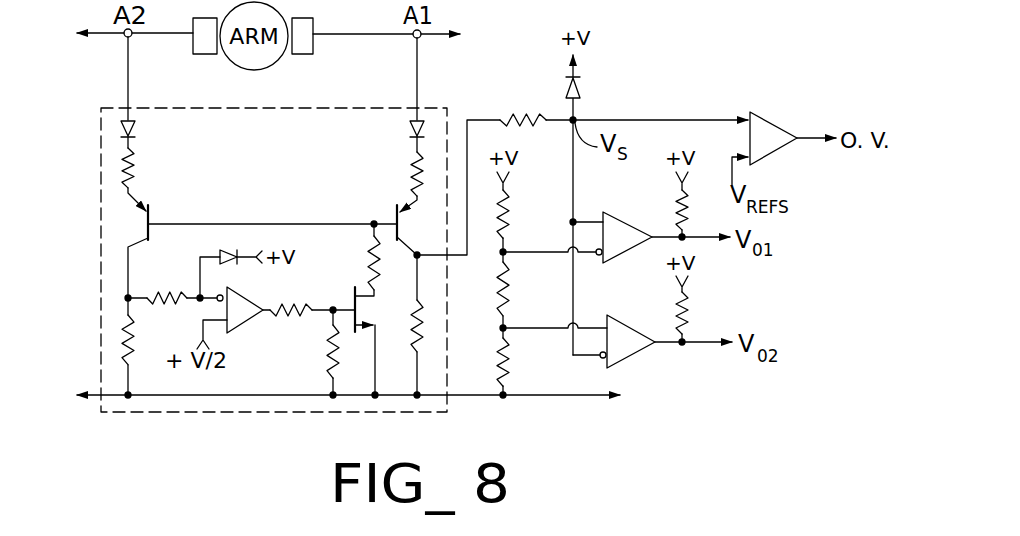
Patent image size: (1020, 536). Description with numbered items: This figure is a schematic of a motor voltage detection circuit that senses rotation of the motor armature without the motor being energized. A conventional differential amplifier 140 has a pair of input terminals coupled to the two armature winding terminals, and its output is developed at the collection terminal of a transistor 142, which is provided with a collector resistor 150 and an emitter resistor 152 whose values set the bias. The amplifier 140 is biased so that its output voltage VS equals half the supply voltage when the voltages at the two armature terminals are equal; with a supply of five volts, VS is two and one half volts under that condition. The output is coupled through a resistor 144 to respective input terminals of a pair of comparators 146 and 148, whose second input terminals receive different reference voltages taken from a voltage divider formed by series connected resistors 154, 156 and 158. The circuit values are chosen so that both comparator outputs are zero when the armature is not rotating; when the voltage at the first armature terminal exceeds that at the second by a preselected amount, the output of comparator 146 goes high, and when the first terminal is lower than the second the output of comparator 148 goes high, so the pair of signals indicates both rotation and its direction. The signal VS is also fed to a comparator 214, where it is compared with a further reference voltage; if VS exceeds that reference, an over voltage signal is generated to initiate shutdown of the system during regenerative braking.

The differential amplifier 140 is at (98, 150).
The transistor 142 is at (400, 208).
The resistor 144 is at (527, 115).
The comparator 146 is at (626, 222).
The comparator 148 is at (630, 326).
The collector resistor 150 is at (413, 332).
The emitter resistor 152 is at (411, 172).
The resistor 154 is at (510, 365).
The resistor 156 is at (510, 298).
The resistor 158 is at (510, 219).
The comparator 214 is at (768, 112).